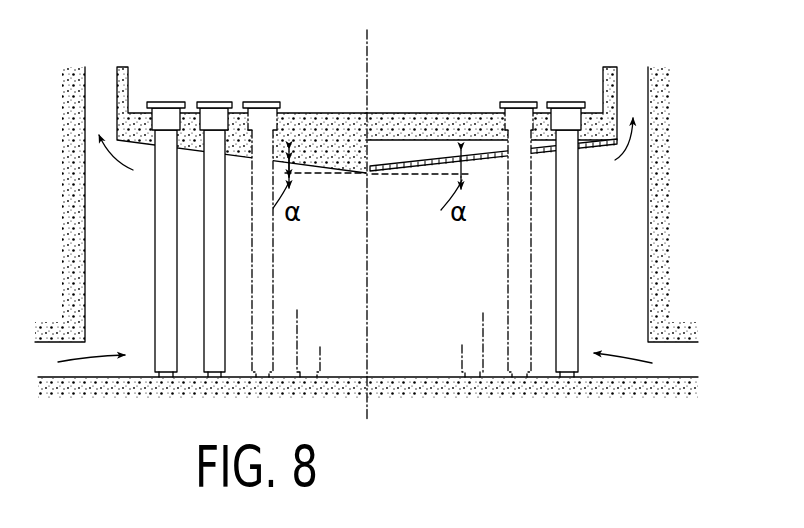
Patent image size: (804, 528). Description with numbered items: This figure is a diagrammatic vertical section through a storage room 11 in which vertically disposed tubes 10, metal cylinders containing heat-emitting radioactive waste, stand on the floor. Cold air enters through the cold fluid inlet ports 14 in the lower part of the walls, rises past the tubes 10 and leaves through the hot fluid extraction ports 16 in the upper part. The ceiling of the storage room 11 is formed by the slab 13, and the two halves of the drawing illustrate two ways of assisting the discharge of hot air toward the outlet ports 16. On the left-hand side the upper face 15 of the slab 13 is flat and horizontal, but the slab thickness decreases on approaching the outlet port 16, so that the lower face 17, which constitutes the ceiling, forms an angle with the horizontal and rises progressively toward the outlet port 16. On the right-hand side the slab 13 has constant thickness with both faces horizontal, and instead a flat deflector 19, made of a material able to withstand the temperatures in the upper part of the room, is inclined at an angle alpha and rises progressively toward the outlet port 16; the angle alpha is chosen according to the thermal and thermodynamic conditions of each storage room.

The tube 10 is at (212, 353).
The storage room 11 is at (328, 290).
The slab 13 is at (330, 140).
The cold fluid inlet port 14 is at (47, 360).
The upper face 15 is at (288, 110).
The hot fluid extraction port 16 is at (97, 83).
The lower face 17 is at (176, 153).
The deflector 19 is at (486, 155).